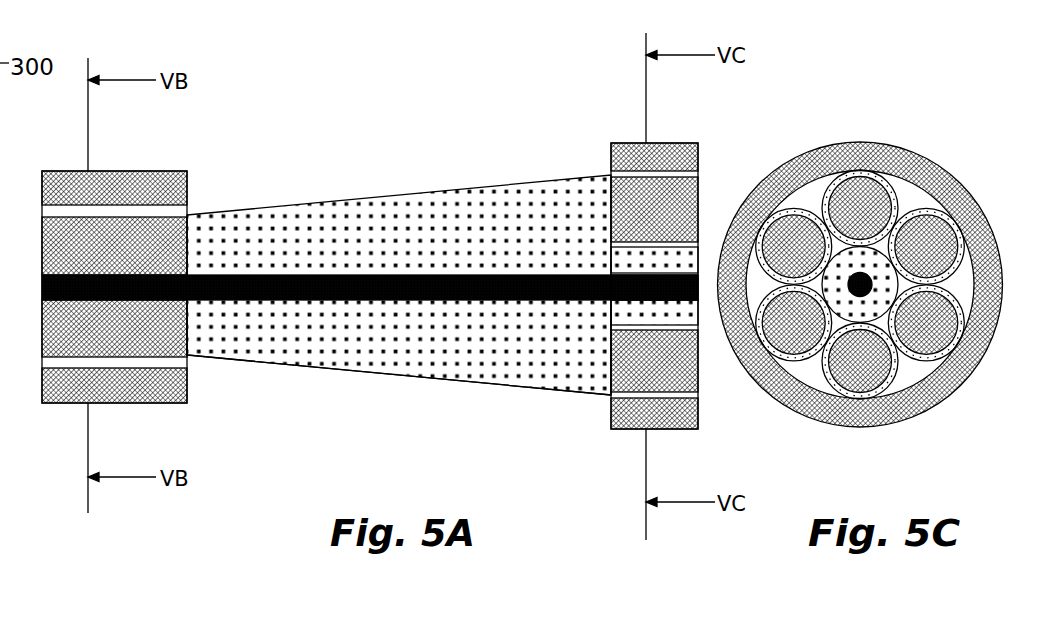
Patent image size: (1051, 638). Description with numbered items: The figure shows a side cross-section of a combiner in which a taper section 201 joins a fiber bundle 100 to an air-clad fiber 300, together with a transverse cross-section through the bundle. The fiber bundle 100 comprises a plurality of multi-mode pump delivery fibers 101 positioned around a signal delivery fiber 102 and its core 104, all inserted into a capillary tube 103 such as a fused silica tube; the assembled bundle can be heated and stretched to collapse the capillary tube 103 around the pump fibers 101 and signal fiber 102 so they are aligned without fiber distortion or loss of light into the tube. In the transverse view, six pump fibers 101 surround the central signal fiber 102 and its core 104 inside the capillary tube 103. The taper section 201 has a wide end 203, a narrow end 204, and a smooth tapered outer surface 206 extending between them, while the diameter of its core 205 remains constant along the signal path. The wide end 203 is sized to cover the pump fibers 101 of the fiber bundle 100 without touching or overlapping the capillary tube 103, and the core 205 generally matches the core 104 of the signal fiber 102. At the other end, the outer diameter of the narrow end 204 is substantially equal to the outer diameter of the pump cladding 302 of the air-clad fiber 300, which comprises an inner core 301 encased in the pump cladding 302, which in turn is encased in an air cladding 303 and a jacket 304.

In FIG. 5A, the fiber bundle 100 is at (683, 281).
In FIG. 5C, the fiber bundle 100 is at (869, 283).
In FIG. 5C, the multi-mode pump delivery fibers 101 is at (865, 306).
In FIG. 5A, the signal delivery fiber 102 is at (698, 255).
In FIG. 5C, the signal delivery fiber 102 is at (893, 362).
In FIG. 5A, the capillary tube 103 is at (633, 158).
In FIG. 5C, the capillary tube 103 is at (937, 403).
In FIG. 5A, the core 104 is at (698, 293).
In FIG. 5C, the core 104 is at (870, 277).
In FIG. 5A, the taper section 201 is at (422, 233).
In FIG. 5A, the wide end 203 is at (595, 352).
In FIG. 5A, the narrow end 204 is at (192, 335).
In FIG. 5A, the core 205 is at (255, 302).
In FIG. 5A, the tapered outer surface 206 is at (480, 383).
In FIG. 5A, the air-clad fiber 300 is at (149, 278).
In FIG. 5A, the inner core 301 is at (58, 302).
In FIG. 5A, the pump cladding 302 is at (162, 255).
In FIG. 5A, the air cladding 303 is at (185, 213).
In FIG. 5A, the jacket 304 is at (123, 378).